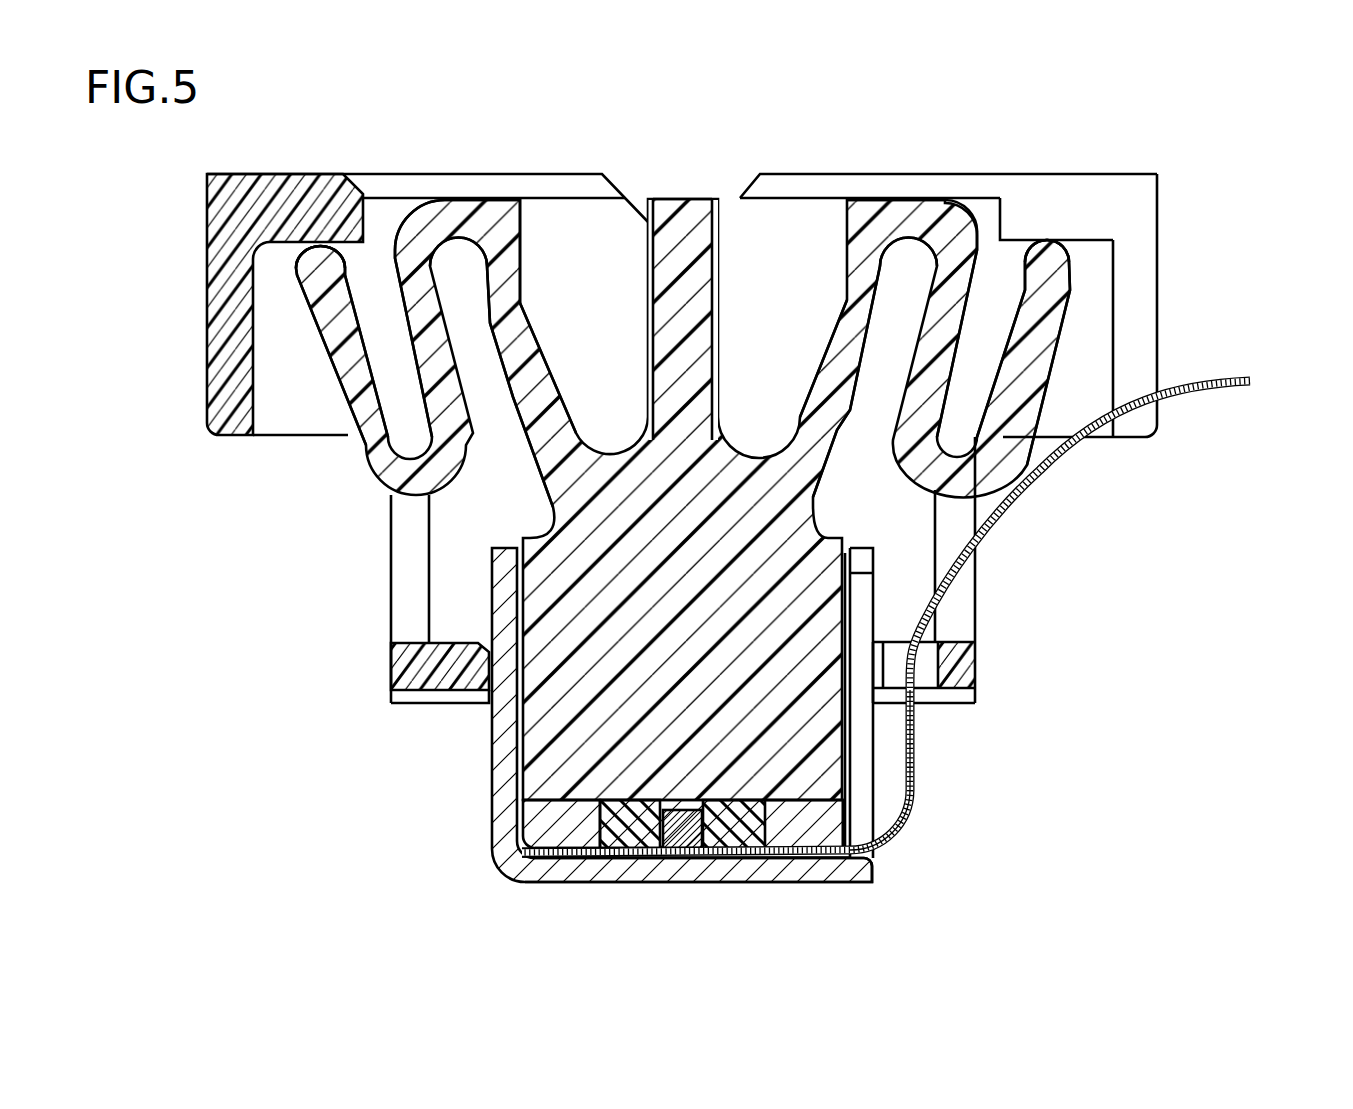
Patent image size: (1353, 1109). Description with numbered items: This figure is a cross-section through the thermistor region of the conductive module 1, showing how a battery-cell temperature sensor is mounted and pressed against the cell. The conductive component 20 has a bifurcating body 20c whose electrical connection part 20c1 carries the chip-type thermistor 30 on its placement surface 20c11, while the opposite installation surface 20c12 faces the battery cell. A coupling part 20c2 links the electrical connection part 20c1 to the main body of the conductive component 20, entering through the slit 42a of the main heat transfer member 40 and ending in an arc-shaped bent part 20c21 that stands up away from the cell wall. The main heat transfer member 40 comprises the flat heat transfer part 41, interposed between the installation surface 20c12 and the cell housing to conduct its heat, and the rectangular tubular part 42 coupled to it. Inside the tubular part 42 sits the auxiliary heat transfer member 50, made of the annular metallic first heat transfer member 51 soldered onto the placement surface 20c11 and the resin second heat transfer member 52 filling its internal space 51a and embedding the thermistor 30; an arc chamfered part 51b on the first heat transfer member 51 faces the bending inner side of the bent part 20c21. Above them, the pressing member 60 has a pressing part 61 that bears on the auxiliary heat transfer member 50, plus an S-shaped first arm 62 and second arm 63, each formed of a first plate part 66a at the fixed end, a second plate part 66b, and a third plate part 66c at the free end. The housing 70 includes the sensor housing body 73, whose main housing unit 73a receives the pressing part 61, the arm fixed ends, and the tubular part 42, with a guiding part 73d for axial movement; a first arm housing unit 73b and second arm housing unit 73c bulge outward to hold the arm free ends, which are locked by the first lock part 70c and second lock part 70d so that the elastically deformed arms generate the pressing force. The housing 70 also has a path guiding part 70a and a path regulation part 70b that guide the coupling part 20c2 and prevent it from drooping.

The conductive module 1 is at (1206, 596).
The conductive component 20 is at (1225, 357).
The bifurcating body 20c is at (823, 677).
The electrical connection part 20c1 is at (797, 860).
The coupling part 20c2 is at (913, 752).
The placement surface 20c11 is at (590, 845).
The installation surface 20c12 is at (602, 860).
The bent part 20c21 is at (893, 840).
The thermistor 30 is at (690, 853).
The main heat transfer member 40 is at (355, 752).
The heat transfer part 41 is at (548, 882).
The tubular part 42 is at (493, 760).
The slit 42a is at (863, 723).
The auxiliary heat transfer member 50 is at (783, 935).
The first heat transfer member 51 is at (793, 853).
The internal space 51a is at (630, 863).
The arc chamfered part 51b is at (850, 860).
The second heat transfer member 52 is at (737, 853).
The pressing member 60 is at (672, 174).
The pressing part 61 is at (830, 762).
The first arm 62 is at (290, 295).
The second arm 63 is at (1075, 295).
The first plate part 66a is at (530, 338).
The second plate part 66b is at (452, 262).
The third plate part 66c is at (353, 313).
The housing 70 is at (682, 385).
The path guiding part 70a is at (963, 610).
The path regulation part 70b is at (977, 665).
The first lock part 70c is at (352, 174).
The second lock part 70d is at (1020, 203).
The sensor housing body 73 is at (1093, 160).
The main housing unit 73a is at (390, 668).
The first arm housing unit 73b is at (207, 323).
The second arm housing unit 73c is at (1160, 268).
The guiding part 73d is at (727, 200).